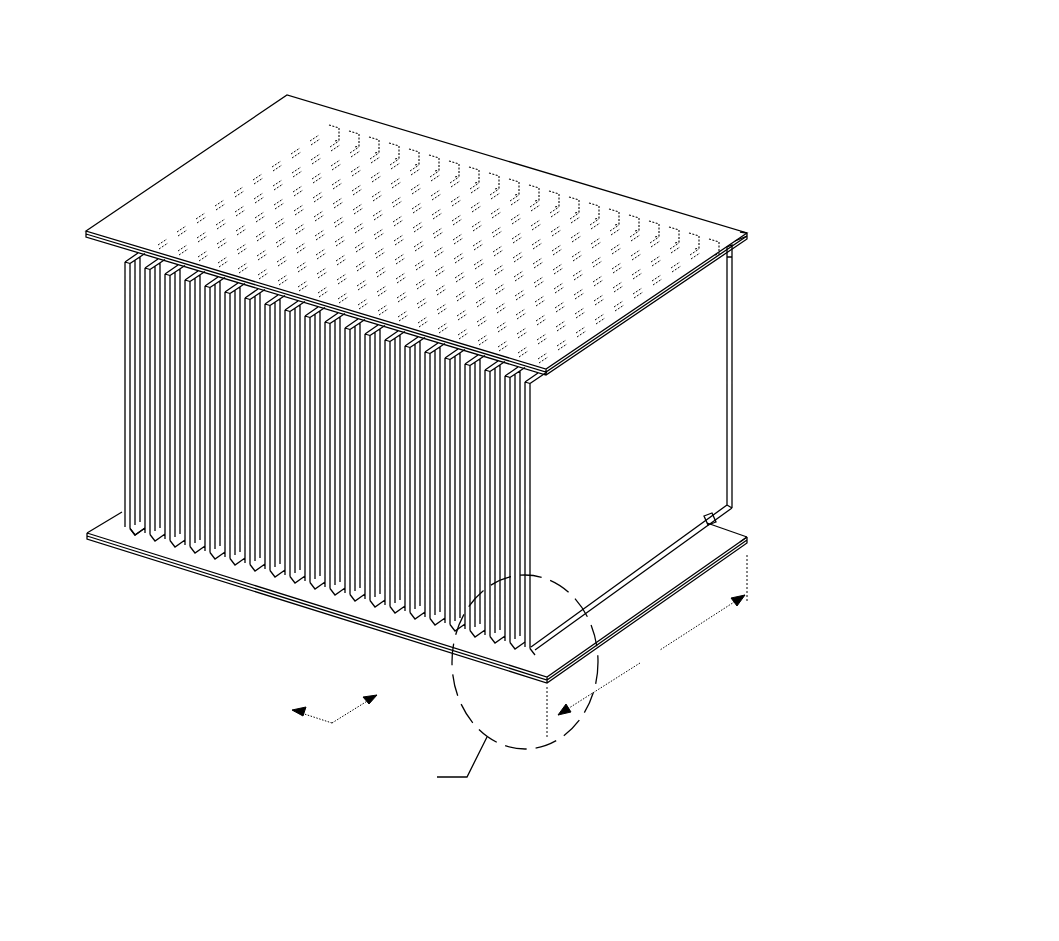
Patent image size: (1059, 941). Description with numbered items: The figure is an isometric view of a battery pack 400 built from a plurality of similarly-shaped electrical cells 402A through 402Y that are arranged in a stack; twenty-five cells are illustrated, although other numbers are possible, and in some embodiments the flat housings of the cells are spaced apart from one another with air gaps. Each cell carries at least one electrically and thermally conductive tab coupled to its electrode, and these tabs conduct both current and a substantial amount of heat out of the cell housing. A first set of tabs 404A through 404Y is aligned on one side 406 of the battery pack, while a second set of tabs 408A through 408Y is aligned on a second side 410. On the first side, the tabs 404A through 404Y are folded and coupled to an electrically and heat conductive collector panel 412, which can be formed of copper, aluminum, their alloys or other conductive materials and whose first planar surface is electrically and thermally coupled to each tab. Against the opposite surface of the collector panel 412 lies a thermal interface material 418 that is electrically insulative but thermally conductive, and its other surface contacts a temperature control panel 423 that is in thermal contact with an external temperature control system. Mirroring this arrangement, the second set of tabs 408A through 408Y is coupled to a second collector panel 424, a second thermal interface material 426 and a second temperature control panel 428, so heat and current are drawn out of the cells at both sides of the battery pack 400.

The battery pack 400 is at (692, 53).
The electrical cell 402A is at (292, 451).
The electrical cell 402Y is at (676, 450).
The electrically and thermally conductive tab 404A is at (105, 551).
The electrically and thermally conductive tab 404Y is at (735, 518).
The side of the battery pack 406 is at (458, 594).
The tab of second set 408A is at (298, 92).
The tab of second set 408Y is at (687, 212).
The second side 410 is at (456, 235).
The collector panel 412 is at (745, 535).
The thermal interface material 418 is at (752, 540).
The temperature control panel 423 is at (750, 570).
The second collector panel 424 is at (738, 246).
The second thermal interface material 426 is at (750, 235).
The second temperature control panel 428 is at (735, 226).